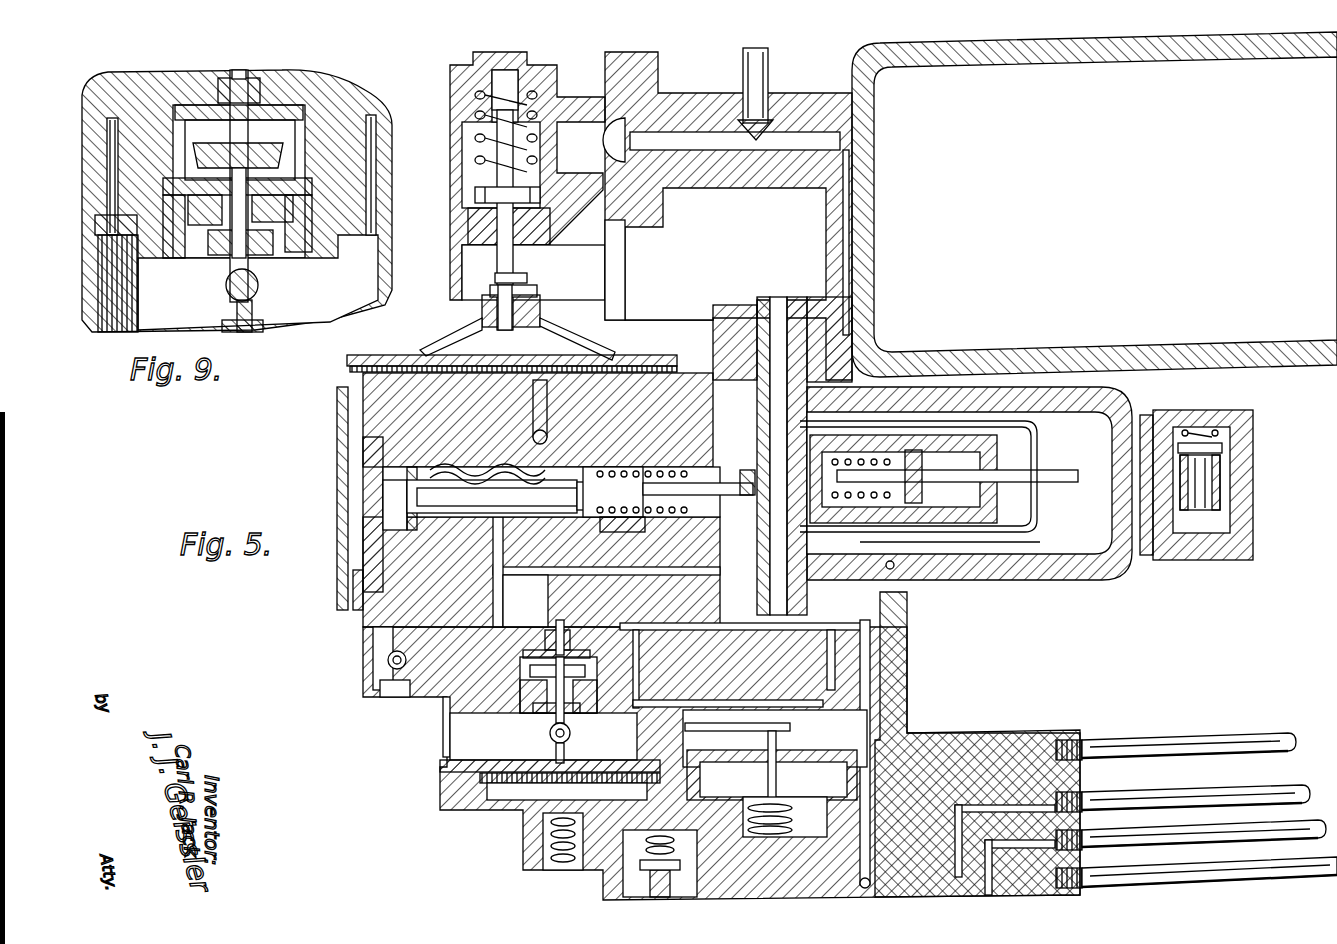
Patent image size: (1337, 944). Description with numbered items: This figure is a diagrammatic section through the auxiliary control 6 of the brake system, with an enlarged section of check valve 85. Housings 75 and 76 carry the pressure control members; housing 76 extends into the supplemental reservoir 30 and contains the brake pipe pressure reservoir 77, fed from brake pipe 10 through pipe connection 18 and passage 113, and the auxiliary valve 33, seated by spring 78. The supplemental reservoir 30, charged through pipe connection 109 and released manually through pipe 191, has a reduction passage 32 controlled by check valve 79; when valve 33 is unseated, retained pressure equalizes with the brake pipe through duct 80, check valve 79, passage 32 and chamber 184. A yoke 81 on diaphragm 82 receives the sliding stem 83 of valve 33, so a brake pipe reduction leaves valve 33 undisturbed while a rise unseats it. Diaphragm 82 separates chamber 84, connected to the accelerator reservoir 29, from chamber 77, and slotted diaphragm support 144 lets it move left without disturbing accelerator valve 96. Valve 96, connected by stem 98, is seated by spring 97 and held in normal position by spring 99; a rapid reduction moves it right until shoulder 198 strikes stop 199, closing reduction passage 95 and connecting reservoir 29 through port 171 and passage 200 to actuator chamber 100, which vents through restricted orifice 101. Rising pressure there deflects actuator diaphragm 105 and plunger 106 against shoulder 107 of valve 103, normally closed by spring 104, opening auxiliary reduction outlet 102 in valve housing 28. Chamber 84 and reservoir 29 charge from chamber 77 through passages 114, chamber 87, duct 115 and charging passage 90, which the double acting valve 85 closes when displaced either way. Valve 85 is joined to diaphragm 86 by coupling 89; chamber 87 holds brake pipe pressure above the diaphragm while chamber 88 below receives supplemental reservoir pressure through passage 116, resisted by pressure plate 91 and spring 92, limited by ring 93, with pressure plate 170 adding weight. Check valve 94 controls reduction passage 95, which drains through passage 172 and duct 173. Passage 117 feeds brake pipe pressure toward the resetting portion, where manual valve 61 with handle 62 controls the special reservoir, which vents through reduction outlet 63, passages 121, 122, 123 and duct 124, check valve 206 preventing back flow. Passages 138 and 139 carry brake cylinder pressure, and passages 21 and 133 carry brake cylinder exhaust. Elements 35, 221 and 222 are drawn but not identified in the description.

In FIG. 5, the auxiliary control 6 is at (752, 175).
In FIG. 5, the brake pipe 10 is at (577, 496).
In FIG. 5, the pipe connection 18 is at (768, 60).
In FIG. 5, the passage 21 is at (1191, 835).
In FIG. 5, the valve housing 28 is at (452, 103).
In FIG. 5, the accelerator reservoir 29 is at (1094, 204).
In FIG. 5, the supplemental reservoir 30 is at (1160, 633).
In FIG. 5, the reduction passage 32 is at (1145, 420).
In FIG. 5, the auxiliary valve 33 is at (922, 383).
In FIG. 5, the slider 35 is at (913, 450).
In FIG. 5, the valve 61 is at (767, 752).
In FIG. 5, the handle 62 is at (790, 727).
In FIG. 5, the reduction outlet 63 is at (707, 738).
In FIG. 5, the housing 75 is at (340, 440).
In FIG. 5, the housing 76 is at (980, 447).
In FIG. 5, the brake pipe pressure reservoir 77 is at (969, 483).
In FIG. 5, the spring 78 is at (812, 468).
In FIG. 5, the check valve 79 is at (1222, 505).
In FIG. 5, the duct 80 is at (1220, 558).
In FIG. 5, the yoke 81 is at (1040, 518).
In FIG. 5, the diaphragm 82 is at (735, 357).
In FIG. 5, the stem 83 is at (1078, 473).
In FIG. 5, the accelerator chamber 84 is at (740, 547).
In FIG. 9, the check valve 85 is at (228, 252).
In FIG. 5, the check valve 85 is at (560, 724).
In FIG. 5, the diaphragm 86 is at (448, 760).
In FIG. 9, the chamber 87 is at (330, 295).
In FIG. 5, the chamber 87 is at (543, 736).
In FIG. 5, the chamber 88 is at (522, 815).
In FIG. 9, the coupling 89 is at (258, 292).
In FIG. 5, the coupling 89 is at (571, 733).
In FIG. 5, the charging passage 90 is at (617, 524).
In FIG. 5, the pressure plate 91 is at (540, 840).
In FIG. 5, the spring 92 is at (543, 858).
In FIG. 5, the ring 93 is at (450, 796).
In FIG. 5, the check valve 94 is at (388, 660).
In FIG. 5, the reduction passage 95 is at (373, 634).
In FIG. 5, the accelerator valve 96 is at (425, 498).
In FIG. 5, the spring 97 is at (492, 496).
In FIG. 5, the stem 98 is at (745, 465).
In FIG. 5, the spring 99 is at (642, 503).
In FIG. 5, the actuator chamber 100 is at (425, 358).
In FIG. 5, the restricted orifice 101 is at (480, 338).
In FIG. 5, the auxiliary reduction outlet 102 is at (672, 140).
In FIG. 5, the valve 103 is at (476, 195).
In FIG. 5, the spring 104 is at (522, 172).
In FIG. 5, the actuator diaphragm 105 is at (596, 350).
In FIG. 5, the plunger 106 is at (517, 307).
In FIG. 5, the shoulder 107 is at (528, 276).
In FIG. 5, the pipe connection 109 is at (1220, 880).
In FIG. 5, the passage 113 is at (843, 210).
In FIG. 9, the passages 114 is at (400, 162).
In FIG. 5, the passages 114 is at (752, 615).
In FIG. 9, the duct 115 is at (250, 78).
In FIG. 5, the duct 115 is at (570, 650).
In FIG. 5, the passage 116 is at (865, 685).
In FIG. 5, the passage 117 is at (870, 655).
In FIG. 5, the passage 121 is at (871, 855).
In FIG. 5, the passage 122 is at (789, 817).
In FIG. 5, the passage 123 is at (775, 755).
In FIG. 5, the duct 124 is at (862, 760).
In FIG. 5, the passage 133 is at (1070, 856).
In FIG. 5, the passage 138 is at (1178, 796).
In FIG. 5, the passage 139 is at (1040, 805).
In FIG. 5, the diaphragm support 144 is at (748, 520).
In FIG. 5, the pressure plate 170 is at (602, 770).
In FIG. 5, the port 171 is at (487, 486).
In FIG. 9, the passage 172 is at (106, 125).
In FIG. 5, the passage 172 is at (443, 705).
In FIG. 9, the duct 173 is at (123, 273).
In FIG. 5, the duct 173 is at (445, 725).
In FIG. 5, the chamber 184 is at (870, 508).
In FIG. 5, the pipe 191 is at (1222, 740).
In FIG. 5, the shoulder 198 is at (669, 492).
In FIG. 5, the stop 199 is at (746, 456).
In FIG. 5, the passage 200 is at (545, 582).
In FIG. 5, the check valve 206 is at (623, 880).
In FIG. 5, the plug 221 is at (543, 872).
In FIG. 5, the passage 222 is at (382, 698).